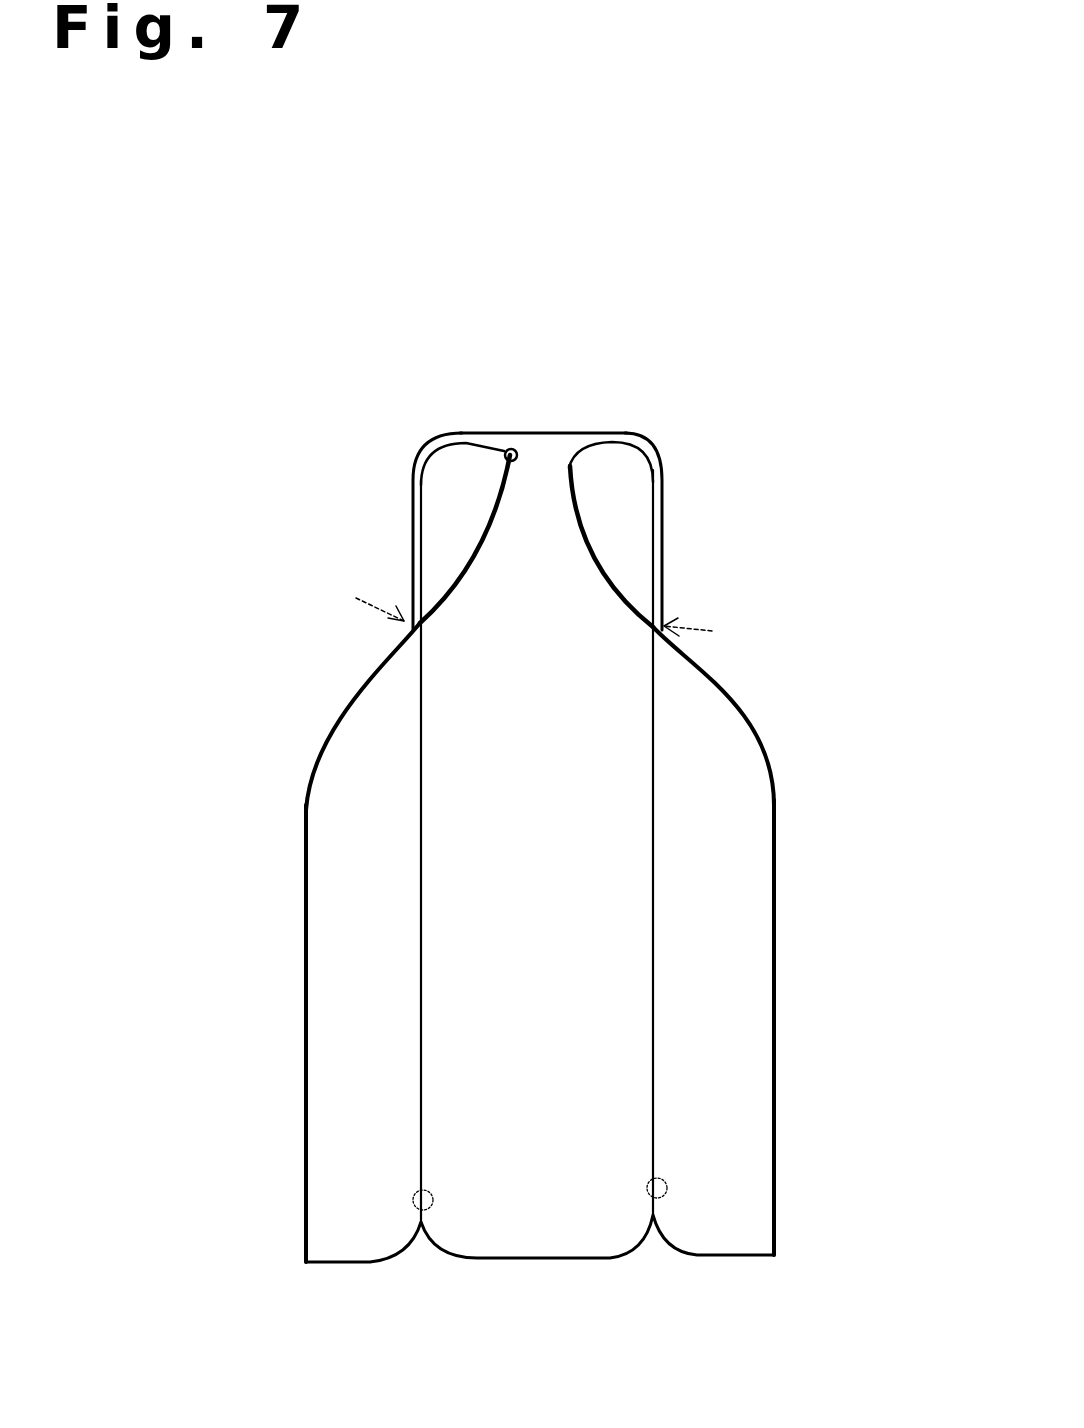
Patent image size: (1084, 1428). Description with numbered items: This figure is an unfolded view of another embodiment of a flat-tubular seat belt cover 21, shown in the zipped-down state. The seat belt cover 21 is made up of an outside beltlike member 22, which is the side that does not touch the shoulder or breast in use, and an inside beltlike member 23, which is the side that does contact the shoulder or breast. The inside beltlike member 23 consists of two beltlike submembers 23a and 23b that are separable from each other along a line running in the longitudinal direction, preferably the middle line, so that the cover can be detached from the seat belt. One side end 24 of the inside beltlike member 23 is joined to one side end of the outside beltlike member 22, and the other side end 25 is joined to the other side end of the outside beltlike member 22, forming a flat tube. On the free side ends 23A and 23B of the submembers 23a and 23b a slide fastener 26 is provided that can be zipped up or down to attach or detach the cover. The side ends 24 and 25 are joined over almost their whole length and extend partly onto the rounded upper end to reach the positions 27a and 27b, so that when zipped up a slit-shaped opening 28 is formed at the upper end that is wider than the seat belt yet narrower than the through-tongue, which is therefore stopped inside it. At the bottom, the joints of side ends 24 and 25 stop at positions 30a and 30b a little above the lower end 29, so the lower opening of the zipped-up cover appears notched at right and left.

The seat belt cover 21 is at (678, 457).
The outside beltlike member 22 is at (598, 802).
The inside beltlike member 23 is at (735, 948).
The beltlike submember 23a is at (355, 843).
The beltlike submember 23b is at (750, 875).
The other side end of beltlike submember 23A is at (305, 1083).
The other side end of beltlike submember 23B is at (775, 1038).
The side end of inside beltlike member 24 is at (417, 520).
The side end of inside beltlike member 25 is at (662, 538).
The slide fastener 26 is at (511, 447).
The position on upper end 27a is at (463, 435).
The position on upper end 27b is at (613, 435).
The slit-shaped opening 28 is at (542, 440).
The lower end 29 is at (525, 1260).
The position 30a is at (423, 1205).
The position 30b is at (652, 1200).